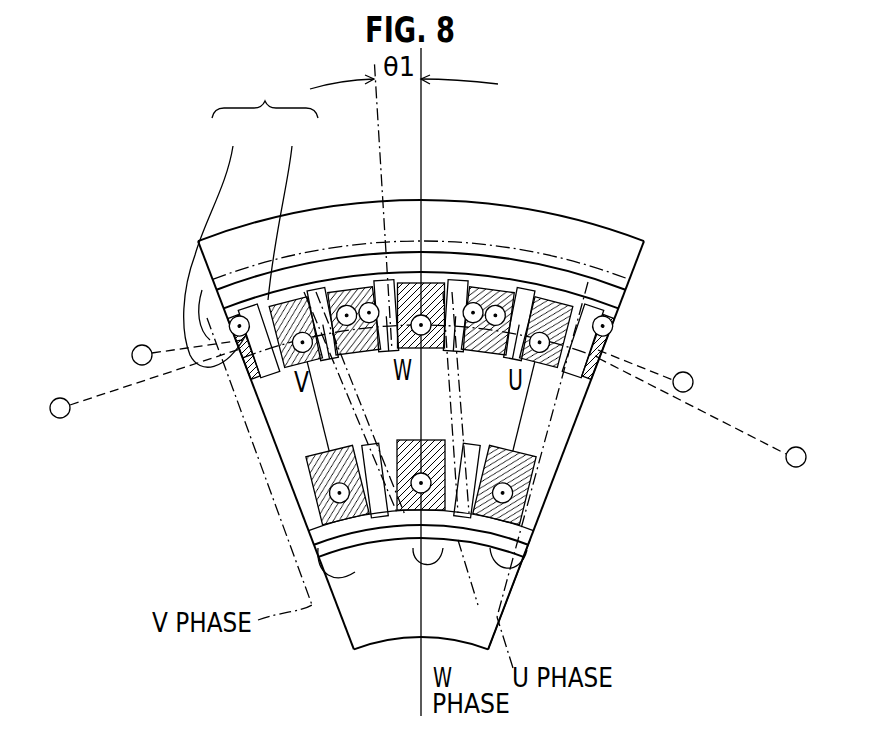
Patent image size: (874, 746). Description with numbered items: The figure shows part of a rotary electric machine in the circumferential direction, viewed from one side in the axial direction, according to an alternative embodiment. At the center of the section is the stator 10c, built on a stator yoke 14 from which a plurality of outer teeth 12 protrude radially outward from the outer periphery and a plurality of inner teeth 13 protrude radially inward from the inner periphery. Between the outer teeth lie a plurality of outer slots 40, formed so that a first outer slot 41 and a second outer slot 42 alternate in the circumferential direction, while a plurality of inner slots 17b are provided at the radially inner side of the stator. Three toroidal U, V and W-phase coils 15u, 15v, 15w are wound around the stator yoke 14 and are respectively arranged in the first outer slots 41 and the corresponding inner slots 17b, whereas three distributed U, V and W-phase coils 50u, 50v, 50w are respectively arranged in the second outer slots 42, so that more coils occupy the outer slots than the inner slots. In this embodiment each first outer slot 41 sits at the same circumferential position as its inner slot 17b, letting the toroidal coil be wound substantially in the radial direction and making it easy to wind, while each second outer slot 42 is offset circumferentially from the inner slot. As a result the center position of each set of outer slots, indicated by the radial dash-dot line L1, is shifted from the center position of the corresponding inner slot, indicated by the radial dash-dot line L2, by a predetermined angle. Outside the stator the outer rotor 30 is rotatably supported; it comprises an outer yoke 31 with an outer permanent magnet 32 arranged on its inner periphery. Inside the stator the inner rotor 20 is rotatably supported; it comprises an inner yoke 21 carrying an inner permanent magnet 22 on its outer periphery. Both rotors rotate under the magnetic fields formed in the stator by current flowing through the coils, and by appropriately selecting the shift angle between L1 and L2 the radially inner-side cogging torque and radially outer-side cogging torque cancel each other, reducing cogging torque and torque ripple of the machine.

The stator 10c is at (572, 430).
The outer teeth 12 is at (524, 290).
The inner teeth 13 is at (412, 513).
The stator yoke 14 is at (572, 452).
The U-phase coil 15u is at (525, 558).
The V-phase coil 15v is at (328, 575).
The W-phase coil 15w is at (414, 565).
The inner slots 17b is at (308, 486).
The inner rotor 20 is at (500, 617).
The inner yoke 21 is at (492, 588).
The inner permanent magnet 22 is at (538, 548).
The outer rotor 30 is at (636, 273).
The outer yoke 31 is at (643, 240).
The outer permanent magnet 32 is at (610, 297).
The outer slots 40 is at (265, 95).
The first outer slot 41 is at (285, 208).
The second outer slot 42 is at (215, 242).
The U-phase distributed coil 50u is at (487, 290).
The V-phase distributed coil 50v is at (255, 398).
The W-phase distributed coil 50w is at (367, 357).
The center position of outer slots L1 is at (376, 148).
The center position of inner slot L2 is at (419, 666).